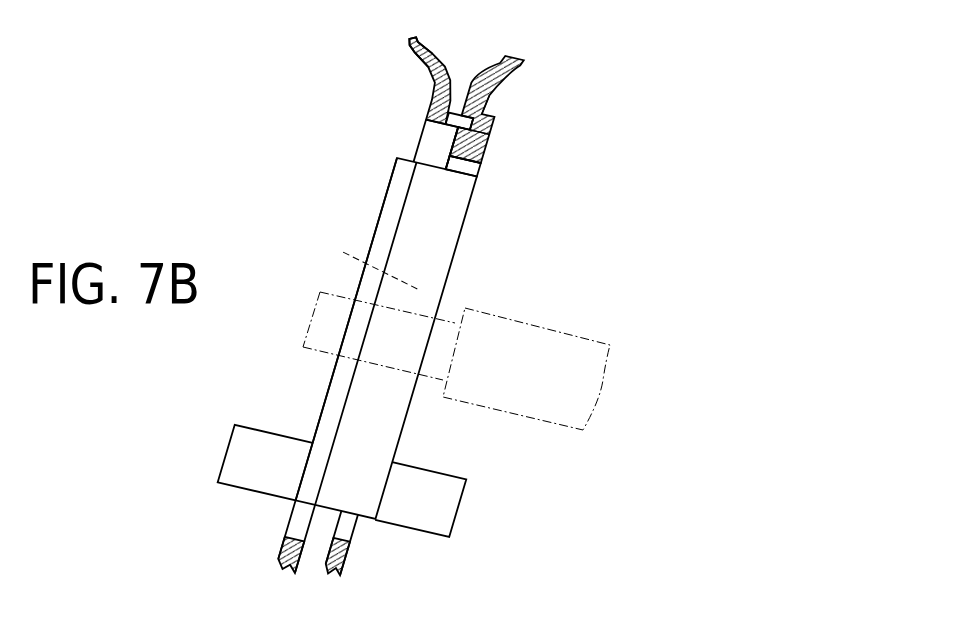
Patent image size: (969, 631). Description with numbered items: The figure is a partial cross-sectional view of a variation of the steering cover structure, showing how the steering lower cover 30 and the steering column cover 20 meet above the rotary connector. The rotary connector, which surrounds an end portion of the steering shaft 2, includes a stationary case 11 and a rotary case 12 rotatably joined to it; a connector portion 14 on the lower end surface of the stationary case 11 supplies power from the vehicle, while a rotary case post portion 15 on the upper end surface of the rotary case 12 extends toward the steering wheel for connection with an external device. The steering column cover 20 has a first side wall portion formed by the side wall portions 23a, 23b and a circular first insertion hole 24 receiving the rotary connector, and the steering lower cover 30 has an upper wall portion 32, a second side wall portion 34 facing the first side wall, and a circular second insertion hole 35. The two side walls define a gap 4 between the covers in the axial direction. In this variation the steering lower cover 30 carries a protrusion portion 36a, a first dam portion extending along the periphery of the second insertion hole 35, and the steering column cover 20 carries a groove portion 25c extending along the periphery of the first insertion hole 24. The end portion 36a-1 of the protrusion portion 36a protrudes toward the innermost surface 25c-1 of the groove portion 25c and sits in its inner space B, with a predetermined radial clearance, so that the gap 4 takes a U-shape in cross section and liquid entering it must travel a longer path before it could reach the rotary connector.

The steering shaft 2 is at (537, 323).
The gap 4 is at (460, 102).
The stationary case 11 is at (443, 257).
The rotary case 12 is at (390, 215).
The connector portion 14 is at (448, 507).
The rotary case post portion 15 is at (238, 442).
The steering column cover 20 is at (491, 309).
The side wall portion 23a is at (350, 547).
The side wall portion 23b is at (497, 90).
The first insertion hole 24 is at (480, 168).
The groove portion 25c is at (482, 143).
The innermost surface 25c-1 is at (492, 127).
The steering lower cover 30 is at (355, 290).
The upper wall portion 32 is at (438, 56).
The second side wall portion 34 is at (436, 82).
The second insertion hole 35 is at (425, 150).
The protrusion portion 36a is at (447, 118).
The end portion 36a-1 is at (493, 115).
The inner space B is at (497, 99).